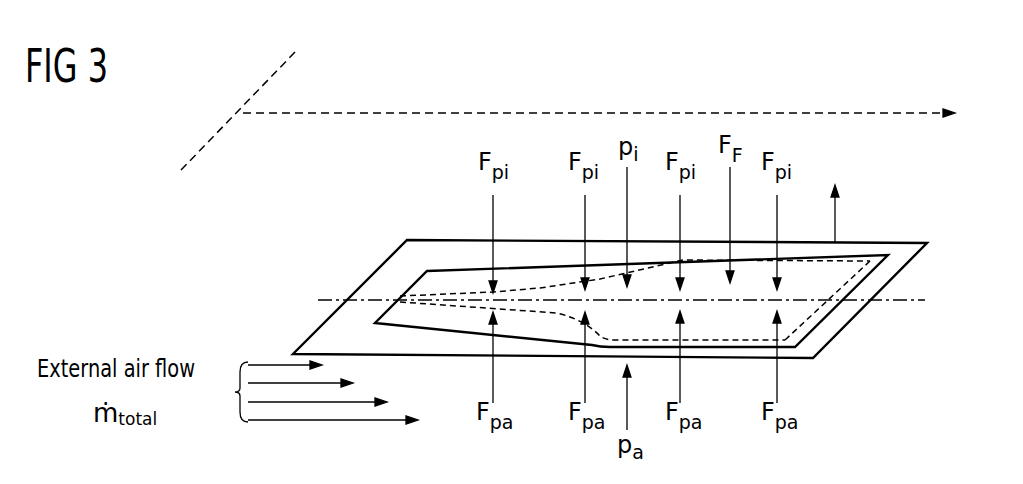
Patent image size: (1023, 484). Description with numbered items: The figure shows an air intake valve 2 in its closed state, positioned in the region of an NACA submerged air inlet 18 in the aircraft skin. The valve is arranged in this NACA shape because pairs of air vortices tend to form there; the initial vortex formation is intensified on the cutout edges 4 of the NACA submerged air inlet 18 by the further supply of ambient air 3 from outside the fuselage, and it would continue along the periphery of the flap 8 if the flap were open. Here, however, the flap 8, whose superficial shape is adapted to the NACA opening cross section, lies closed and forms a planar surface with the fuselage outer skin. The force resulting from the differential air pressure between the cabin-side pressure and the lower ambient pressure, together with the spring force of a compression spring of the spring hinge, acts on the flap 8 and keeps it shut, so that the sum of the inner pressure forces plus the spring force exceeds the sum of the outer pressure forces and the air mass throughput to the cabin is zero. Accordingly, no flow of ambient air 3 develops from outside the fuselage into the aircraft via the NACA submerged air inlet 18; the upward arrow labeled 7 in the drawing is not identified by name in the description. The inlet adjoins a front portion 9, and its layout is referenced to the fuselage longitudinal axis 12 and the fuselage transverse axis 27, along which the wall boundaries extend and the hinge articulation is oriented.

The air intake valve 2 is at (460, 268).
The ambient air 3 is at (545, 418).
The cutout edges 4 is at (812, 260).
The suction flow direction 7 is at (834, 204).
The flap 8 is at (843, 275).
The front portion 9 is at (400, 297).
The fuselage longitudinal axis 12 is at (880, 113).
The NACA submerged air inlet 18 is at (863, 381).
The fuselage transverse axis 27 is at (287, 62).